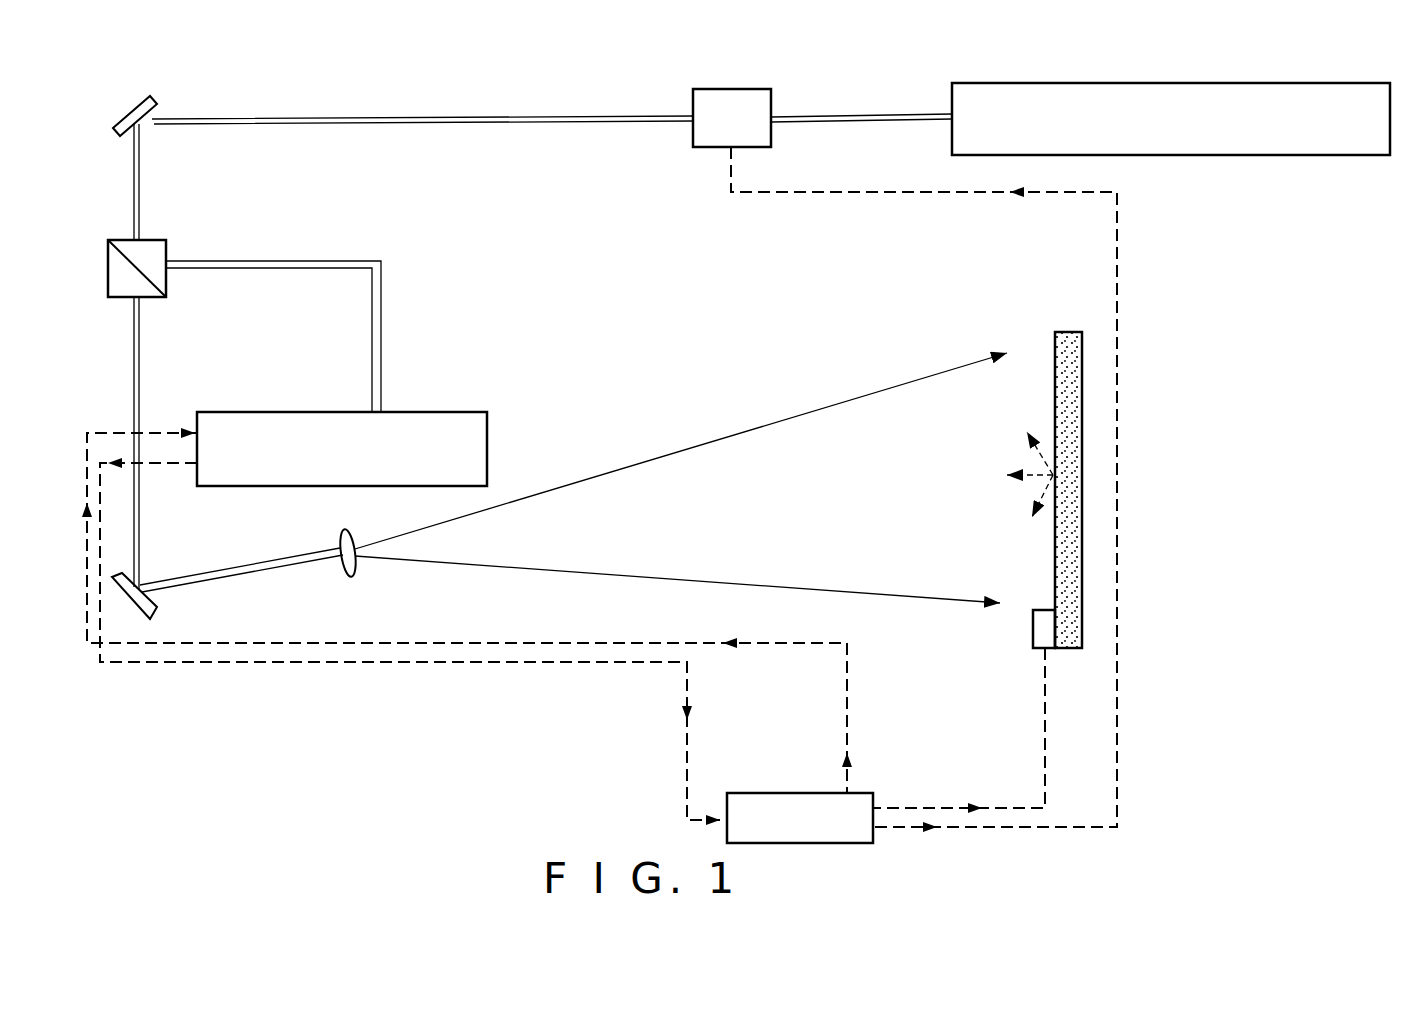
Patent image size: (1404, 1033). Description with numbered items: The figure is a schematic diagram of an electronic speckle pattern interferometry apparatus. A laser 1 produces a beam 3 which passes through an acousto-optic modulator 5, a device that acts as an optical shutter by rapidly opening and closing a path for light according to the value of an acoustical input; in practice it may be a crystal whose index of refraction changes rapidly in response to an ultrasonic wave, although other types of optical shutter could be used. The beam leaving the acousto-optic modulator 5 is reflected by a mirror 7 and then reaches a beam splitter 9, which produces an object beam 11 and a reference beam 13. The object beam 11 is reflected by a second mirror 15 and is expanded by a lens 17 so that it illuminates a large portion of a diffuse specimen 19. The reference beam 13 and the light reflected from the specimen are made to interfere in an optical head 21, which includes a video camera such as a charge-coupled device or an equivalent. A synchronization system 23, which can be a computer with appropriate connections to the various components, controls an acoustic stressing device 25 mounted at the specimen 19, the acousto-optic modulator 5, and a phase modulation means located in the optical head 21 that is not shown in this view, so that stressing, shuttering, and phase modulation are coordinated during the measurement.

The laser 1 is at (1243, 155).
The beam 3 is at (853, 113).
The acousto-optic modulator 5 is at (693, 138).
The mirror 7 is at (128, 118).
The beam splitter 9 is at (166, 240).
The object beam 11 is at (141, 366).
The reference beam 13 is at (382, 260).
The mirror 15 is at (160, 607).
The lens 17 is at (340, 547).
The diffuse specimen 19 is at (1053, 332).
The optical head 21 is at (487, 412).
The synchronization system 23 is at (780, 793).
The acoustic stressing device 25 is at (1033, 637).